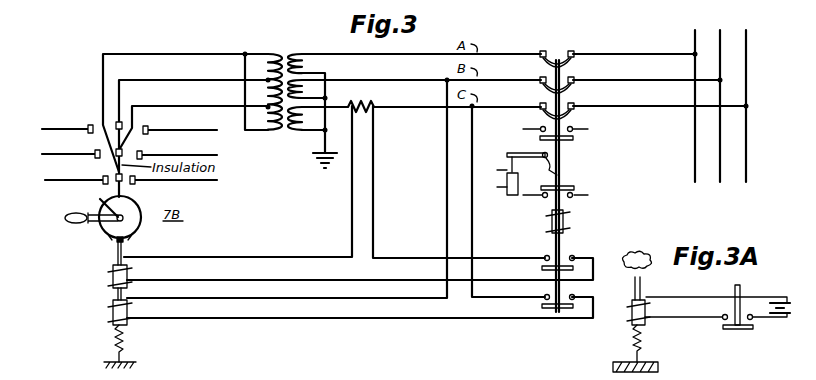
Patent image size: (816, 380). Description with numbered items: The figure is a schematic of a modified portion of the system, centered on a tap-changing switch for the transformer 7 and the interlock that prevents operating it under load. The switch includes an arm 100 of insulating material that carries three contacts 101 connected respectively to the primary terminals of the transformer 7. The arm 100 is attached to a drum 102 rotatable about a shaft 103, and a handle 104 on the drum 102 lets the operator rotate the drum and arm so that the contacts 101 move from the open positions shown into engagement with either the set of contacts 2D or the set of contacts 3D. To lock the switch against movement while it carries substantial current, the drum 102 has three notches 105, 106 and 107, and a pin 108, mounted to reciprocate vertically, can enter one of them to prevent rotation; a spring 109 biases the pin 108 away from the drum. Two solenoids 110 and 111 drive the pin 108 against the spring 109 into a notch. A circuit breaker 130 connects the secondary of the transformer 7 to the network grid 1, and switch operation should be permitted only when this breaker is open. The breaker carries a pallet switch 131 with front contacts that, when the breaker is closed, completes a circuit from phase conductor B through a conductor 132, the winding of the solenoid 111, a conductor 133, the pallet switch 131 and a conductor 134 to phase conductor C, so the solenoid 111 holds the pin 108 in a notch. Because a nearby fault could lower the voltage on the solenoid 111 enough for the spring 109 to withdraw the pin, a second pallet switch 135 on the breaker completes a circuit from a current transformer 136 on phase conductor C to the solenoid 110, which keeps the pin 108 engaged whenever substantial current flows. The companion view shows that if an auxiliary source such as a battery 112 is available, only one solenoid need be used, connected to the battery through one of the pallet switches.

In FIG. 3, the network circuit or grid 1 is at (675, 148).
In FIG. 3, the transformer 7 is at (288, 42).
In FIG. 3, the set of contacts 2D is at (89, 127).
In FIG. 3, the set of contacts 3D is at (150, 128).
In FIG. 3, the arm 100 is at (124, 190).
In FIG. 3, the contacts 101 is at (121, 123).
In FIG. 3, the drum 102 is at (143, 223).
In FIG. 3A, the drum 102 is at (638, 249).
In FIG. 3, the shaft 103 is at (93, 205).
In FIG. 3, the handle 104 is at (66, 219).
In FIG. 3, the notch 105 is at (108, 238).
In FIG. 3, the notch 106 is at (115, 247).
In FIG. 3, the notch 107 is at (129, 239).
In FIG. 3, the pin 108 is at (113, 273).
In FIG. 3A, the pin 108 is at (641, 286).
In FIG. 3, the spring 109 is at (125, 345).
In FIG. 3A, the spring 109 is at (630, 334).
In FIG. 3, the solenoid 110 is at (128, 273).
In FIG. 3A, the solenoid 110 is at (646, 320).
In FIG. 3, the solenoid 111 is at (128, 310).
In FIG. 3A, the battery 112 is at (794, 296).
In FIG. 3, the circuit breaker 130 is at (612, 125).
In FIG. 3, the pallet switch 131 is at (541, 306).
In FIG. 3, the conductor 132 is at (447, 210).
In FIG. 3, the conductor 133 is at (358, 319).
In FIG. 3, the conductor 134 is at (472, 218).
In FIG. 3, the pallet switch 135 is at (541, 268).
In FIG. 3A, the pallet switch 135 is at (729, 329).
In FIG. 3, the current transformer 136 is at (374, 104).